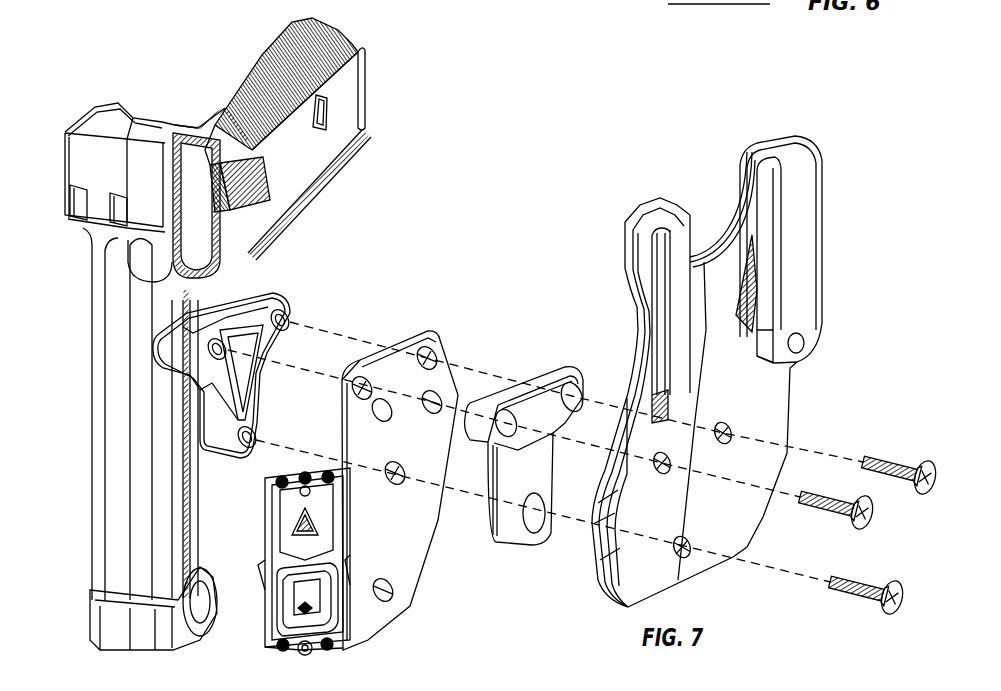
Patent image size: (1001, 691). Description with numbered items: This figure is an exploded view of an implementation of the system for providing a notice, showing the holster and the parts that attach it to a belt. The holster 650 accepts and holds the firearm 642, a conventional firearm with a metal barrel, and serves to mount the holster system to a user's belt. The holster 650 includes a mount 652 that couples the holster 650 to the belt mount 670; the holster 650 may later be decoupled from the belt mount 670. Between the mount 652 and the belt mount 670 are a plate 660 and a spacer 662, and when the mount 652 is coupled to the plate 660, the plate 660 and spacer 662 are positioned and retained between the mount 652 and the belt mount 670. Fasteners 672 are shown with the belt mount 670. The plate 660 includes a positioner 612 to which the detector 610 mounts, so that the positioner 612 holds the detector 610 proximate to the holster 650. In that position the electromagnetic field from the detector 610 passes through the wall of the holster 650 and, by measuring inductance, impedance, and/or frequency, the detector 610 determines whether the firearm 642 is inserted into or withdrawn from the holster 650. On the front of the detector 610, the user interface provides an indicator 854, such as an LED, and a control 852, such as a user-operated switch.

The detector 610 is at (262, 583).
The positioner 612 is at (343, 647).
The firearm 642 is at (353, 42).
The holster 650 is at (92, 383).
The mount 652 is at (277, 298).
The plate 660 is at (430, 332).
The spacer 662 is at (543, 366).
The belt mount 670 is at (667, 200).
The screws 672 is at (880, 463).
The control 852 is at (340, 585).
The indicator 854 is at (309, 493).